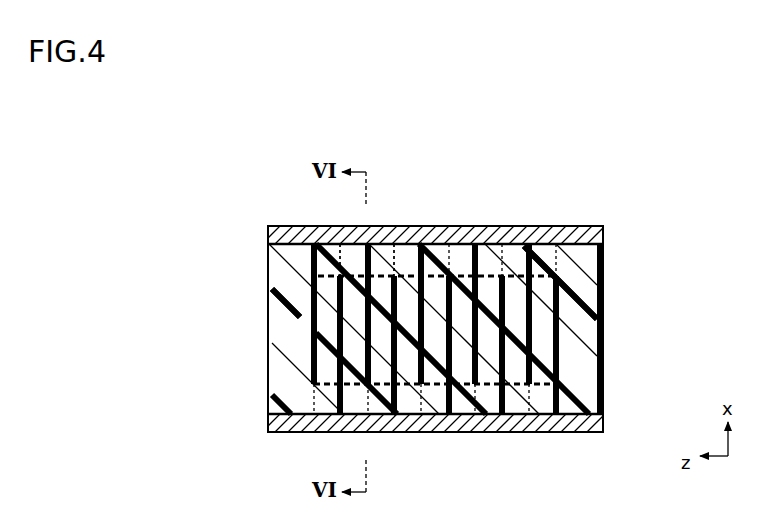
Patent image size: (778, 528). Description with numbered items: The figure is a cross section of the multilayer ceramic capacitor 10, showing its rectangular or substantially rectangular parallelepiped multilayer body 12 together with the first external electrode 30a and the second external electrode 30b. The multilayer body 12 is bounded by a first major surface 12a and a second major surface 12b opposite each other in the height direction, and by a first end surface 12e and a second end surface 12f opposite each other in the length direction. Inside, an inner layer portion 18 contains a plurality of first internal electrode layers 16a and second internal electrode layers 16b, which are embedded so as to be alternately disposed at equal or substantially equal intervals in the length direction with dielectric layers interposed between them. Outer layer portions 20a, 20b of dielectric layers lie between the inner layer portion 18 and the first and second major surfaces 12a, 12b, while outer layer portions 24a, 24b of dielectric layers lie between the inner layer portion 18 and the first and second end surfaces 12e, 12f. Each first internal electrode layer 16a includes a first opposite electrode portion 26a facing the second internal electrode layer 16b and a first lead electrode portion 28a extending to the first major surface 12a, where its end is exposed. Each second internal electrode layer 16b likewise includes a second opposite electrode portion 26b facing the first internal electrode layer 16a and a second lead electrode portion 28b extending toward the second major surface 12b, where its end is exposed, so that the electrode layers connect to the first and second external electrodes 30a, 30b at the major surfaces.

The piezoelectric element 10 is at (187, 225).
The multilayer body 12 is at (264, 250).
The first major surface 12a is at (456, 226).
The second major surface 12b is at (470, 432).
The first end surface 12e is at (264, 294).
The second end surface 12f is at (604, 388).
The first internal electrode layer 16a is at (310, 256).
The second internal electrode layer 16b is at (372, 350).
The inner layer portion 18 is at (565, 332).
The outer layer portion 20a is at (396, 262).
The outer layer portion 20b is at (515, 400).
The outer layer portion 24a is at (305, 356).
The outer layer portion 24b is at (545, 338).
The first opposite electrode portion 26a is at (340, 298).
The second opposite electrode portion 26b is at (447, 313).
The first lead electrode portion 28a is at (340, 268).
The second lead electrode portion 28b is at (503, 405).
The first external electrode 30a is at (583, 233).
The second external electrode 30b is at (597, 427).